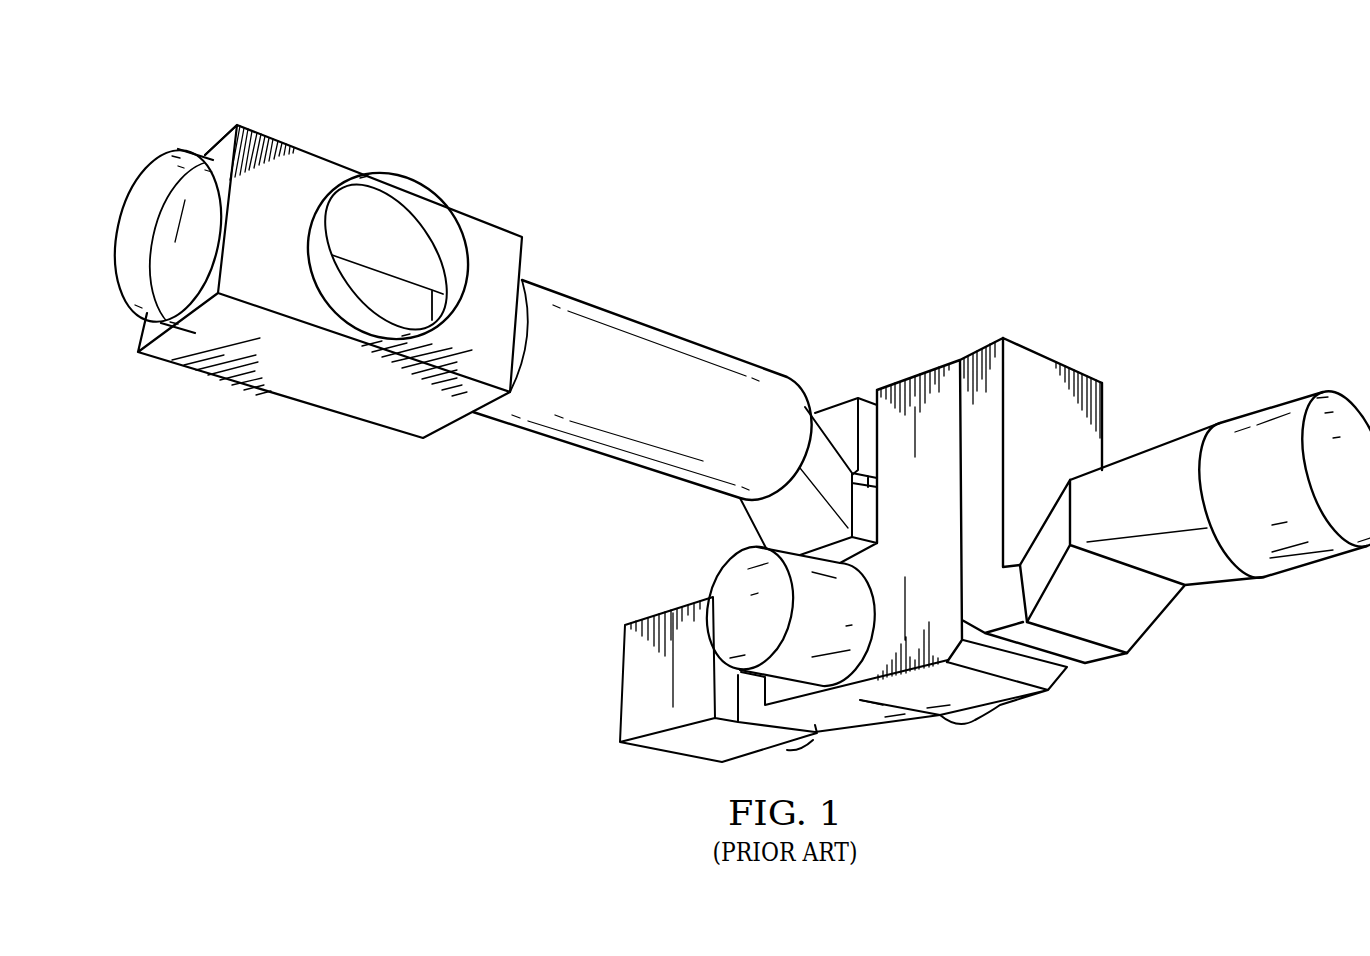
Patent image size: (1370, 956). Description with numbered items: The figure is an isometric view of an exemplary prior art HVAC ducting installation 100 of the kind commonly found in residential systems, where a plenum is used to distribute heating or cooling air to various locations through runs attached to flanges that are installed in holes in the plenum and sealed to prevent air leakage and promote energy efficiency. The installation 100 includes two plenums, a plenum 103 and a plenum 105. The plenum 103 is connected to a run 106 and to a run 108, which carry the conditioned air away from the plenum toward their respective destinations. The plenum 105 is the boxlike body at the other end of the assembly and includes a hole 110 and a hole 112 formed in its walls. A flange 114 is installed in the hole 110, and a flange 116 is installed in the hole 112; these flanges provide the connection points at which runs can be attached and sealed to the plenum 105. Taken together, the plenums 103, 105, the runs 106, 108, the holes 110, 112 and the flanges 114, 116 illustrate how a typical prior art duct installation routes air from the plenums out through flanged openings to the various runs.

The HVAC ducting installation 100 is at (456, 62).
The plenum 103 is at (1040, 356).
The plenum 105 is at (318, 155).
The run 106 is at (660, 331).
The run 108 is at (1165, 443).
The hole 110 is at (330, 307).
The hole 112 is at (222, 158).
The flange 114 is at (412, 180).
The flange 116 is at (142, 182).